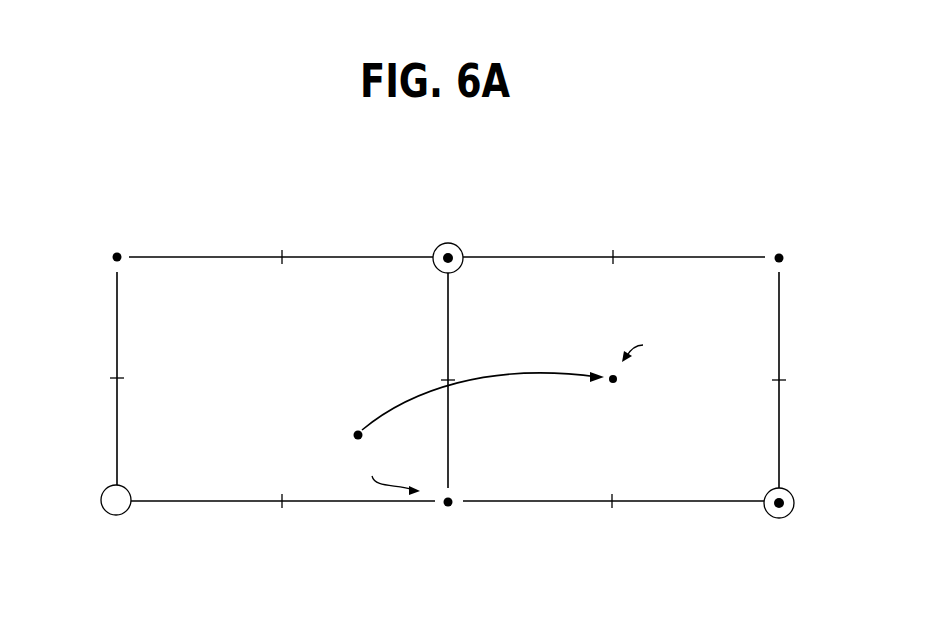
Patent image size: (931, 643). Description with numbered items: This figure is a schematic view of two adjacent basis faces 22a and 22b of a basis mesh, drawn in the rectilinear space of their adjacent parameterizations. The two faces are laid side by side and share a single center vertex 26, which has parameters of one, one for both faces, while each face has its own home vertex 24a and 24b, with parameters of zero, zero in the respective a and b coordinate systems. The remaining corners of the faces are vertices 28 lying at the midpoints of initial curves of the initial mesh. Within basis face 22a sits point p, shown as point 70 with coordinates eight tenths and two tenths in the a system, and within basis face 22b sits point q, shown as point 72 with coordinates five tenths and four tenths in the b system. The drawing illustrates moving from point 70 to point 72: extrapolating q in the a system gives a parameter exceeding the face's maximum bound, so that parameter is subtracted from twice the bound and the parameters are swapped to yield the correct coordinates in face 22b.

The basis face 22a is at (128, 340).
The basis face 22b is at (634, 300).
The home vertex 24a is at (127, 512).
The home vertex 24b is at (769, 516).
The peak vertex 26 is at (463, 228).
The vertex 28 is at (119, 251).
The point p 70 is at (355, 430).
The point q 72 is at (612, 387).